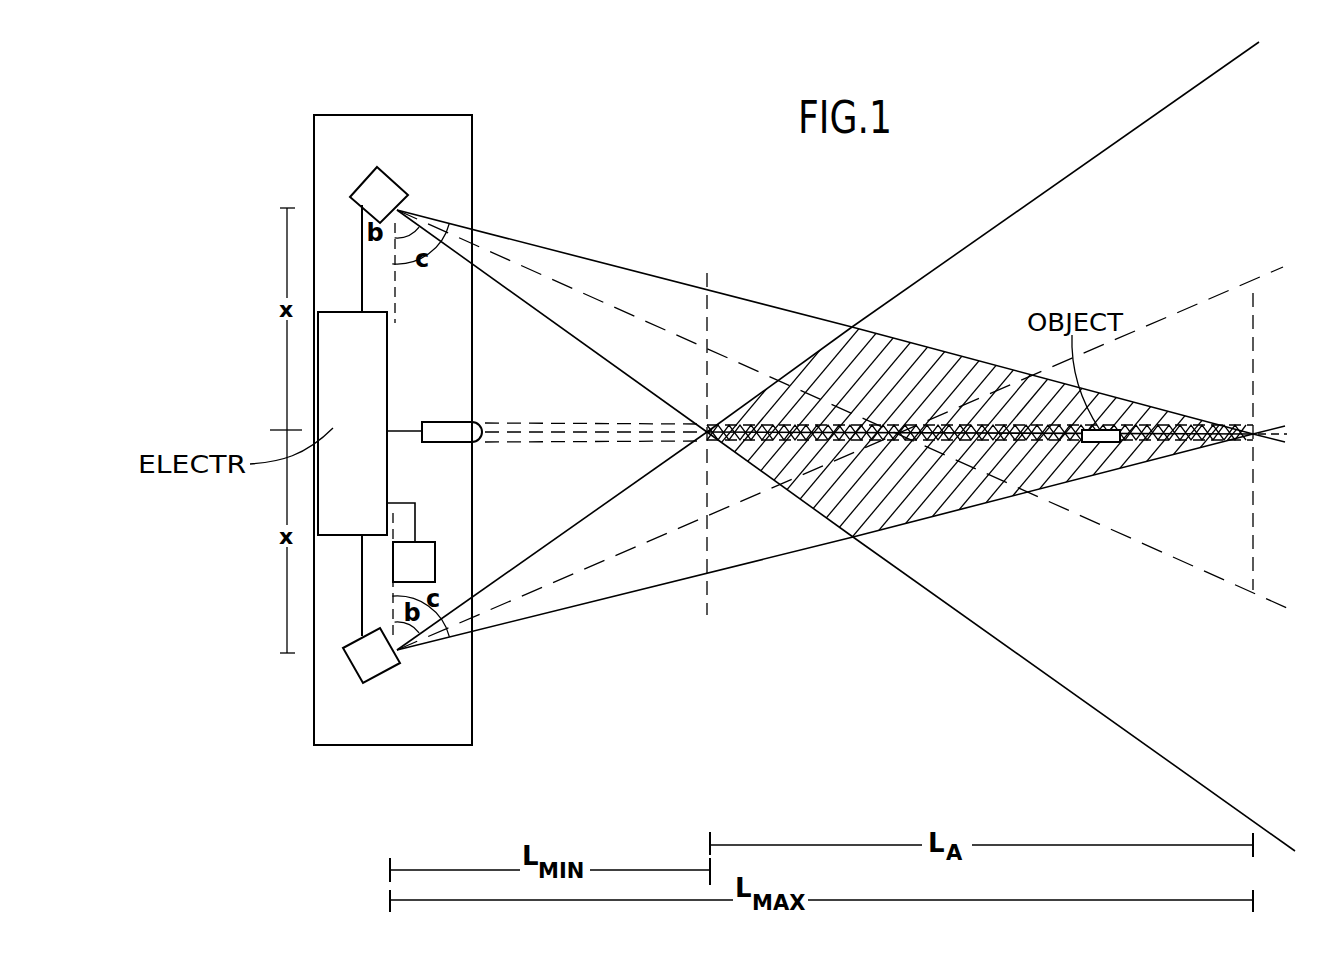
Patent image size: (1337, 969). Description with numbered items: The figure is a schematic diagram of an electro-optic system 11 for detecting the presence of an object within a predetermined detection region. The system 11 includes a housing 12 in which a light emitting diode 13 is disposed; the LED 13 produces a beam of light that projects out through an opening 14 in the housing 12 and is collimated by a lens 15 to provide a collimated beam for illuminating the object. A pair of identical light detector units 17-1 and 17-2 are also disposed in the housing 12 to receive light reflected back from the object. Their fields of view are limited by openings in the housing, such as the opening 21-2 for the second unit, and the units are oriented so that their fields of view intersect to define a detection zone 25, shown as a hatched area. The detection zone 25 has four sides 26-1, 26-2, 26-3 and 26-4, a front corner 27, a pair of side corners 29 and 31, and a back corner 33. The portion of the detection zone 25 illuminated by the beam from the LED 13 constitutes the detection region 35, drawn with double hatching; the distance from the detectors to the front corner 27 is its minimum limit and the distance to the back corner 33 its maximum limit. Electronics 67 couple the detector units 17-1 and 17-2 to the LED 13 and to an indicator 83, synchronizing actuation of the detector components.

The system 11 is at (508, 153).
The housing 12 is at (465, 126).
The light emitting diode 13 is at (456, 445).
The opening 14 is at (474, 423).
The lens 15 is at (487, 427).
The light detector unit 17-1 is at (385, 178).
The light detector unit 17-2 is at (362, 677).
The opening 21-2 is at (457, 642).
The detection zone 25 is at (937, 352).
The side 26-1 is at (822, 350).
The side 26-2 is at (822, 515).
The side 26-3 is at (1113, 473).
The side 26-4 is at (1153, 402).
The front corner 27 is at (708, 436).
The side corner 29 is at (853, 539).
The side corner 31 is at (851, 325).
The back corner 33 is at (1255, 437).
The detection region 35 is at (1160, 457).
The electronics 67 is at (347, 537).
The indicator 83 is at (435, 556).